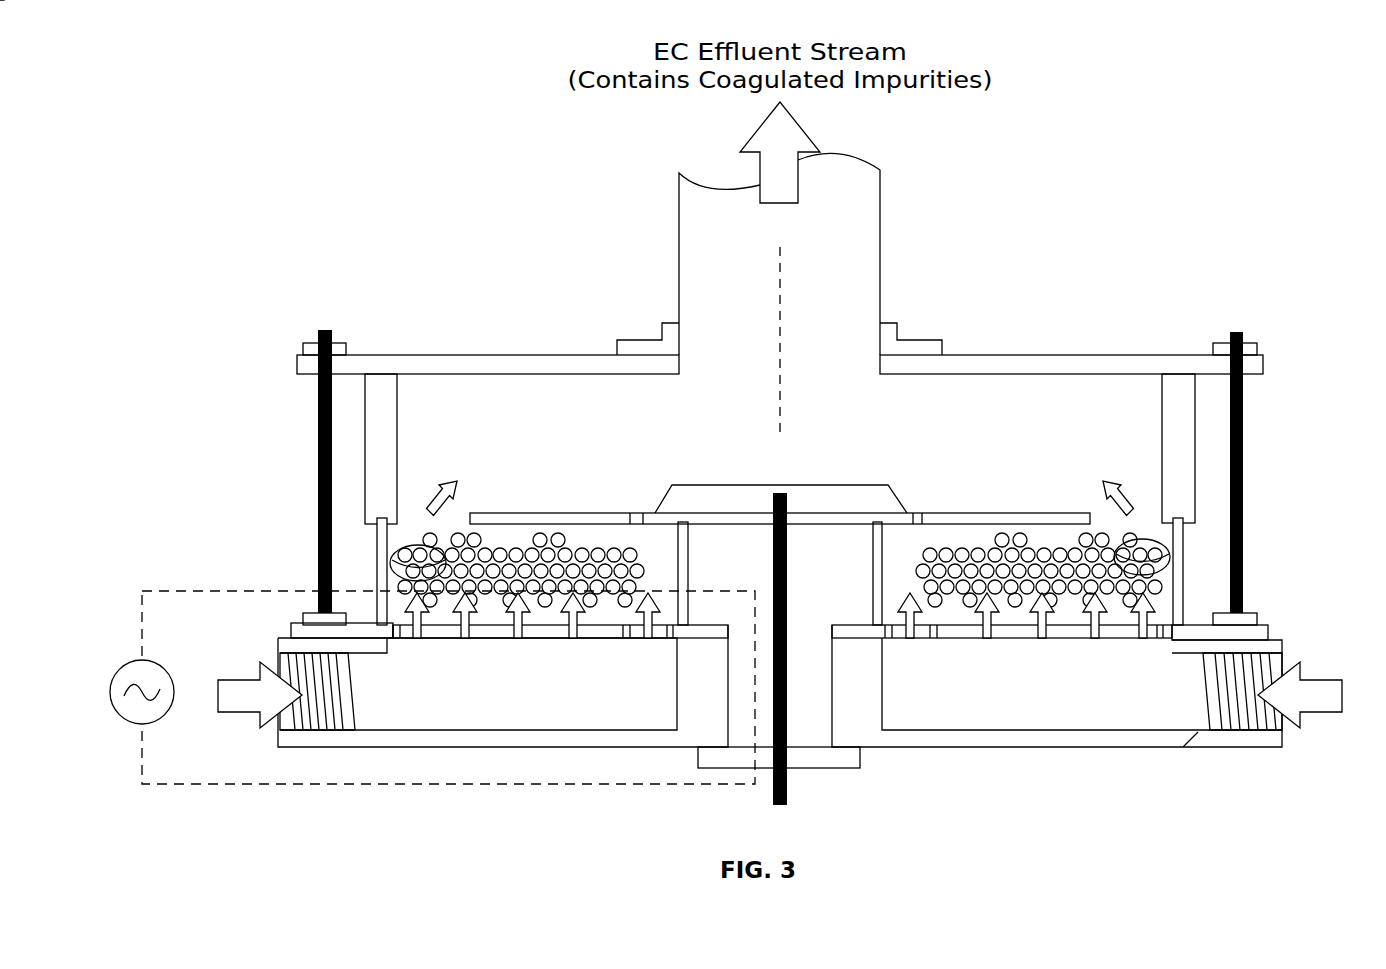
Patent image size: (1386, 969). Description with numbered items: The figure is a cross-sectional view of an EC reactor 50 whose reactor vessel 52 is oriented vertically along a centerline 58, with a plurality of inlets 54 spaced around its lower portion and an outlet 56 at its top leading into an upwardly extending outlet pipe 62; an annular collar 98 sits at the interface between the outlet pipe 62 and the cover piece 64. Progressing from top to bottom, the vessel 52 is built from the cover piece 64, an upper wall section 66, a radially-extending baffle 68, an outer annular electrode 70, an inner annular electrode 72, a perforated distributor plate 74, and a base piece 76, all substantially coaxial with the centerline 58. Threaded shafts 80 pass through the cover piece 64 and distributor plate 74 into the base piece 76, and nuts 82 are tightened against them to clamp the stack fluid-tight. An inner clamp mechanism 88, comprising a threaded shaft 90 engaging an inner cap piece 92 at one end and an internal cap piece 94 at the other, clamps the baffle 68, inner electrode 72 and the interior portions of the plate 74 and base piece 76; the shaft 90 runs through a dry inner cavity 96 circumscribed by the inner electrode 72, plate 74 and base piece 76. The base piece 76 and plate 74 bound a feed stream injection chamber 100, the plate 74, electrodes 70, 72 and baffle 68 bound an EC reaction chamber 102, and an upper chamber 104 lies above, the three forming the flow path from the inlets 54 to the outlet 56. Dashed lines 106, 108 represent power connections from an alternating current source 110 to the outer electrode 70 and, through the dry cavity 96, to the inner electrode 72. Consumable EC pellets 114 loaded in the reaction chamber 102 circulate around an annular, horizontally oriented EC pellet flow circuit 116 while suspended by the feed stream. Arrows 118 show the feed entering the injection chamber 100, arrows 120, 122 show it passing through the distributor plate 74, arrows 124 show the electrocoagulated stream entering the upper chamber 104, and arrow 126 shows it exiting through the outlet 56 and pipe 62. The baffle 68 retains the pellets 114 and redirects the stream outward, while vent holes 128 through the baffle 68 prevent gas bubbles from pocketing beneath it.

The EC reactor 50 is at (325, 260).
The reactor vessel 52 is at (1067, 345).
The inlets 54 is at (345, 713).
The outlet 56 is at (792, 239).
The centerline 58 is at (782, 307).
The outlet pipe 62 is at (678, 248).
The cover piece 64 is at (500, 362).
The upper wall section 66 is at (398, 395).
The radially-extending baffle 68 is at (548, 513).
The outer annular electrode 70 is at (1183, 557).
The inner annular electrode 72 is at (872, 530).
The perforated distributor plate 74 is at (1190, 622).
The base piece 76 is at (1087, 747).
The threaded shafts 80 is at (317, 440).
The nuts 82 is at (318, 343).
The inner clamp mechanism 88 is at (715, 485).
The threaded shaft 90 is at (787, 622).
The inner cap piece 92 is at (860, 485).
The internal cap piece 94 is at (832, 770).
The inner cavity 96 is at (798, 537).
The annular collar 98 is at (642, 340).
The feed stream injection chamber 100 is at (675, 692).
The EC reaction chamber 102 is at (674, 559).
The upper chamber 104 is at (926, 422).
The dashed line 106 is at (212, 590).
The dashed line 108 is at (367, 785).
The alternating current source 110 is at (130, 665).
The consumable EC pellets 114 is at (588, 553).
The EC pellet flow circuit 116 is at (397, 557).
The arrows 118 is at (240, 676).
The arrows 120 is at (465, 632).
The arrows 122 is at (417, 632).
The arrows 124 is at (437, 483).
The arrow 126 is at (803, 127).
The vent holes 128 is at (637, 515).